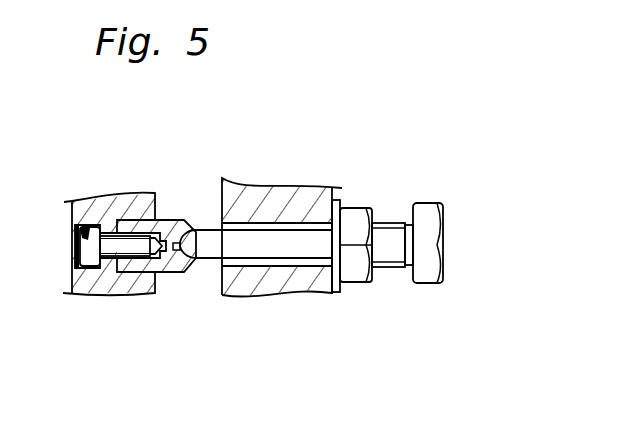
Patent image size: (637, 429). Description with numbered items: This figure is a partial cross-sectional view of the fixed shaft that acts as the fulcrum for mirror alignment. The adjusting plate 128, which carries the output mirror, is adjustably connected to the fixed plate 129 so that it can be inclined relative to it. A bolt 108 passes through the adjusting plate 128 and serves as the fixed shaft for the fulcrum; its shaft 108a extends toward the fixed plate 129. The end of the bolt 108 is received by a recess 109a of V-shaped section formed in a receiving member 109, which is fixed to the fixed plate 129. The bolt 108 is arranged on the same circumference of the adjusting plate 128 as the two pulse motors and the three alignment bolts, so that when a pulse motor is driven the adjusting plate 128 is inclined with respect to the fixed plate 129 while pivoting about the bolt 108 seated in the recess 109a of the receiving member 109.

The fixed plate 129 is at (100, 203).
The adjusting plate 128 is at (303, 192).
The bolt 108 is at (430, 213).
The bolt shaft 108a is at (200, 257).
The receiving member 109 is at (115, 292).
The recess 109a is at (183, 274).